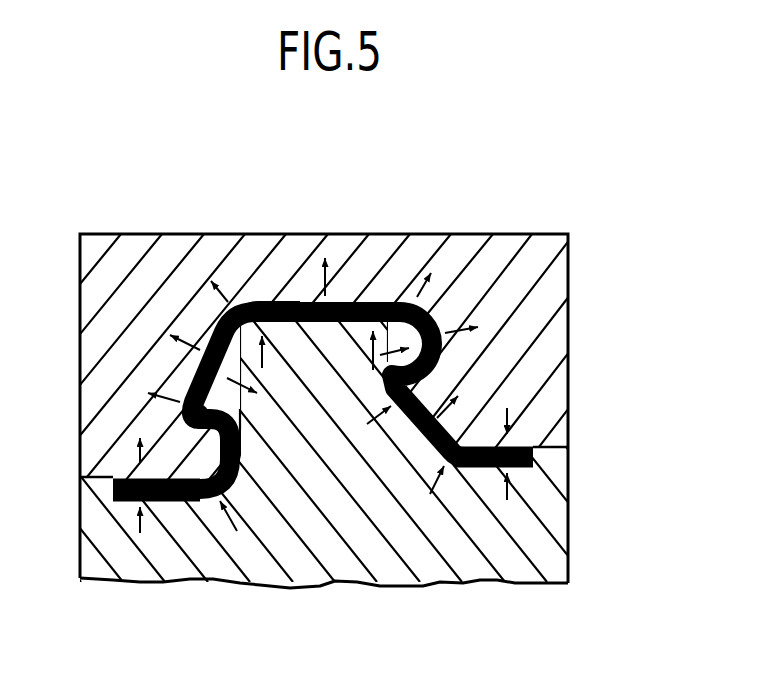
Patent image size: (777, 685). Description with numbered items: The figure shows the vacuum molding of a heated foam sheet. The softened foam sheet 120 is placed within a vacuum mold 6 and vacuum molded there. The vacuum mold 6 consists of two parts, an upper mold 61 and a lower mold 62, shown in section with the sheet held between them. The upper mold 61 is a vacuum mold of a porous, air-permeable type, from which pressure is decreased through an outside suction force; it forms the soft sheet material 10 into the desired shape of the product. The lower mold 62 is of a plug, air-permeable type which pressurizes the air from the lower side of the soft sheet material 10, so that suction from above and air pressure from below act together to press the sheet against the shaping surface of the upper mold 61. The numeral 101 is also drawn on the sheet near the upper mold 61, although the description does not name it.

The vacuum mold 6 is at (522, 222).
The upper mold 61 is at (533, 318).
The lower mold 62 is at (528, 525).
The soft sheet material 10 is at (377, 298).
The seal lip portion 101 is at (278, 300).
The softened foam sheet 120 is at (240, 443).